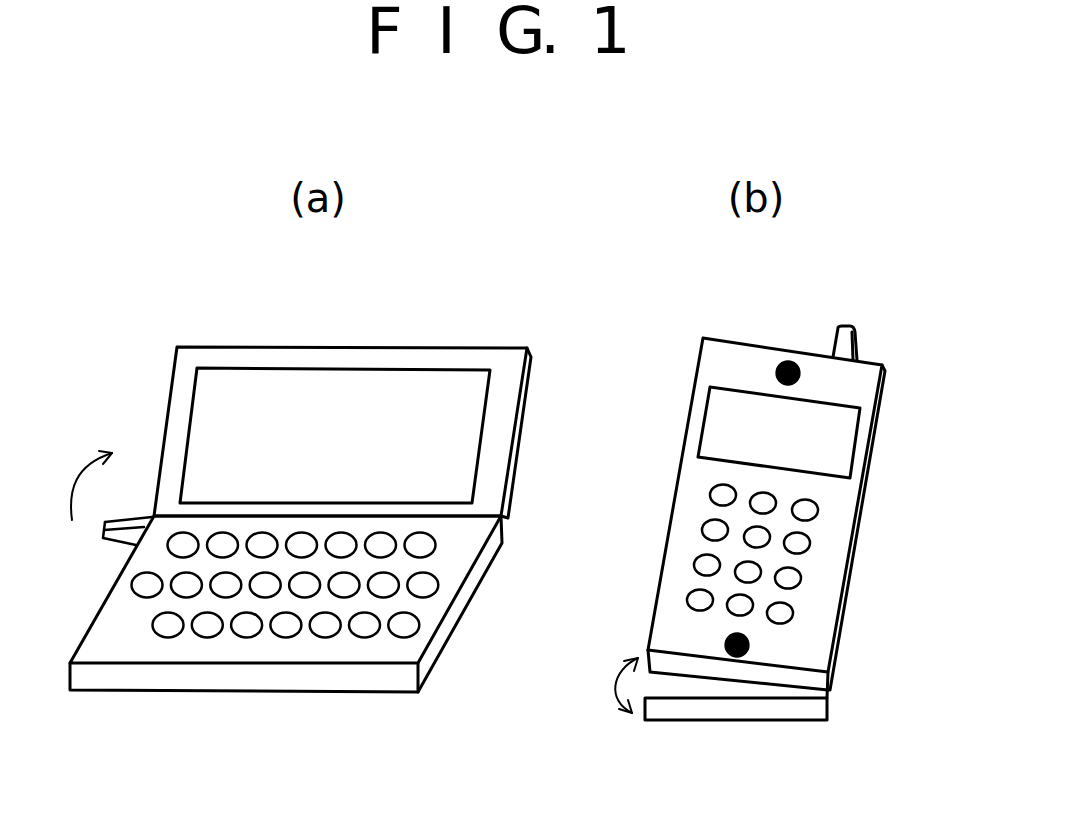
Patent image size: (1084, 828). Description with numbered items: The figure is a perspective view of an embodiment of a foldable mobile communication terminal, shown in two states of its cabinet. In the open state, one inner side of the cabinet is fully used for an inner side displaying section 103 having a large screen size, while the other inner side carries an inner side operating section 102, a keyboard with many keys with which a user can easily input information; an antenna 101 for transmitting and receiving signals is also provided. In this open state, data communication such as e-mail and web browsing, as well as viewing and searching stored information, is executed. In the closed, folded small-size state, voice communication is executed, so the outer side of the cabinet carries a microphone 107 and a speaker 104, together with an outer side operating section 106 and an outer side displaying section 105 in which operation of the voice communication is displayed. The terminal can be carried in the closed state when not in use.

The antenna 101 is at (112, 547).
The inner side operating section 102 is at (187, 637).
The inner side displaying section 103 is at (358, 392).
The speaker 104 is at (788, 362).
The outer side displaying section 105 is at (820, 442).
The outer side operating section 106 is at (825, 568).
The microphone 107 is at (732, 657).